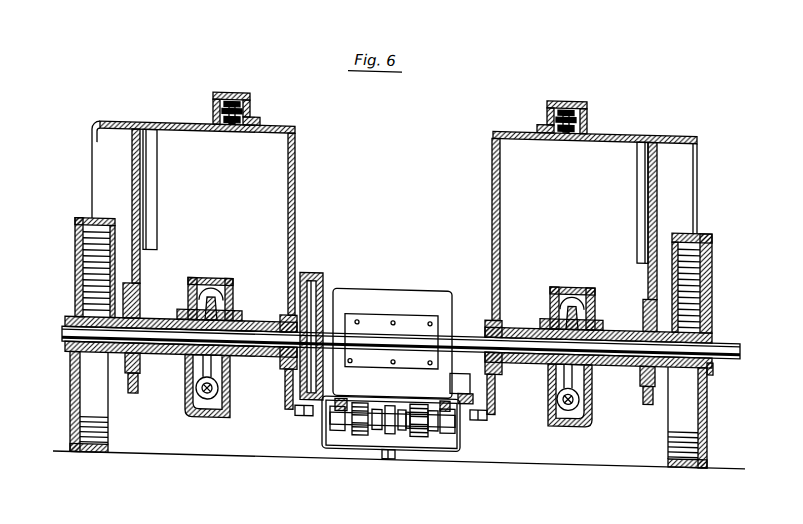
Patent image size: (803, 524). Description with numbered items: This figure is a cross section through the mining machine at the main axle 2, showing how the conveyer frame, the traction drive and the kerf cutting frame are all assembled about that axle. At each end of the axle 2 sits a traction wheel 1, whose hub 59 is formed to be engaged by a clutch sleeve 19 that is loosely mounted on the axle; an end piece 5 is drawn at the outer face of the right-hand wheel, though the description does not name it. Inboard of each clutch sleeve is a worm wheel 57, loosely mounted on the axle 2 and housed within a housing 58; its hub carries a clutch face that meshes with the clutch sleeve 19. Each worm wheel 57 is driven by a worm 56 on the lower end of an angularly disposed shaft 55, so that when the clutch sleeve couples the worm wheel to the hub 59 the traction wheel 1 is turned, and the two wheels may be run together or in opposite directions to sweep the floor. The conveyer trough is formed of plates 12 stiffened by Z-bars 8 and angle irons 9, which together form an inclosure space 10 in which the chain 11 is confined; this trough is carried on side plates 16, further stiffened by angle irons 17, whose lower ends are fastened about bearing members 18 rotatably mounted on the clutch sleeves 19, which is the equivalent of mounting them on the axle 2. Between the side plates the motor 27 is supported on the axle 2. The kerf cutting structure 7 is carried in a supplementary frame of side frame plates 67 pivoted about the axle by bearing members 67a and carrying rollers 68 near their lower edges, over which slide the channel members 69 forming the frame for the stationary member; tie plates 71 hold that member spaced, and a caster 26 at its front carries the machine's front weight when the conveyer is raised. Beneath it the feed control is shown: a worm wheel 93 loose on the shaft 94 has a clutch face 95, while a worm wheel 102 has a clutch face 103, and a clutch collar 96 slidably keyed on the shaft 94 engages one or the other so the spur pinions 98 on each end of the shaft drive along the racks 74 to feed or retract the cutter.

The traction wheel 1 is at (85, 394).
The axle 2 is at (67, 350).
The drum end piece 5 is at (709, 360).
The kerf cutting structure 7 is at (343, 417).
The Z-bar 8 is at (250, 114).
The angle iron 9 is at (231, 101).
The inclosure space 10 is at (222, 123).
The chain 11 is at (236, 106).
The plate 12 is at (186, 136).
The side plate 16 is at (132, 181).
The angle iron 17 is at (148, 208).
The bearing member 18 is at (140, 309).
The clutch sleeve 19 is at (153, 361).
The caster 26 is at (388, 459).
The motor 27 is at (394, 290).
The angularly disposed shaft 55 is at (211, 417).
The worm 56 is at (221, 395).
The worm wheel 57 is at (233, 304).
The housing 58 is at (240, 324).
The hub 59 is at (84, 327).
The side frame plate 67 is at (296, 206).
The bearing member 67a is at (283, 350).
The roller 68 is at (300, 414).
The channel member 69 is at (313, 400).
The tie plate 71 is at (383, 432).
The rack 74 is at (342, 401).
The worm wheel 93 is at (358, 428).
The shaft 94 is at (430, 429).
The clutch face 95 is at (362, 407).
The clutch collar 96 is at (377, 426).
The spur pinion 98 is at (334, 412).
The worm wheel 102 is at (418, 433).
The clutch face 103 is at (416, 407).